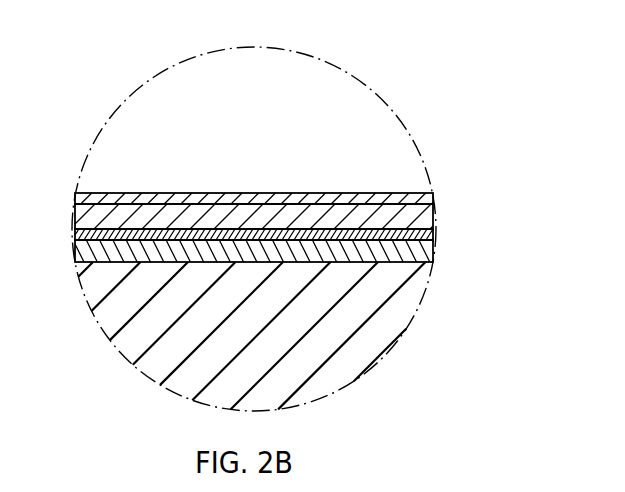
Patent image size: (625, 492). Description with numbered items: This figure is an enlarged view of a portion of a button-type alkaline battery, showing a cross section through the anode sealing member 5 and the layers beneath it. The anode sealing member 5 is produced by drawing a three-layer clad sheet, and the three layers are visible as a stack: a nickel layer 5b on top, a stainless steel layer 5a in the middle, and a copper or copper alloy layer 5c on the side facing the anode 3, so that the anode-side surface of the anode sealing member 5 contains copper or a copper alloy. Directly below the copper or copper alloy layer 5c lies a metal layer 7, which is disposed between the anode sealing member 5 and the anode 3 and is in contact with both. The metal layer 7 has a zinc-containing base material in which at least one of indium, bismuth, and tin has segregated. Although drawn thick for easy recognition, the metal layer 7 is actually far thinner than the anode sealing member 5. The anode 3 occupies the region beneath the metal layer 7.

The anode sealing member 5 is at (307, 181).
The stainless steel layer 5a is at (399, 205).
The nickel layer 5b is at (387, 193).
The copper or copper alloy layer 5c is at (288, 207).
The metal layer 7 is at (430, 252).
The anode 3 is at (390, 313).